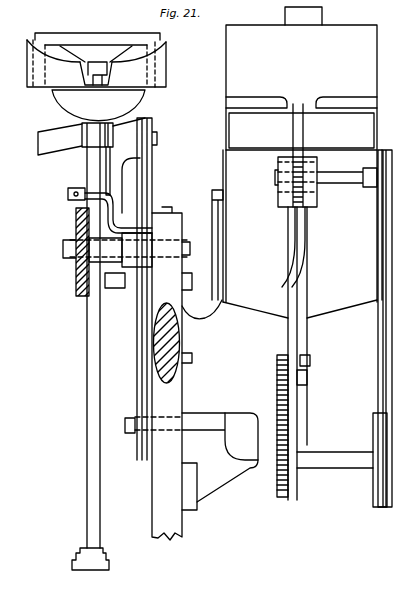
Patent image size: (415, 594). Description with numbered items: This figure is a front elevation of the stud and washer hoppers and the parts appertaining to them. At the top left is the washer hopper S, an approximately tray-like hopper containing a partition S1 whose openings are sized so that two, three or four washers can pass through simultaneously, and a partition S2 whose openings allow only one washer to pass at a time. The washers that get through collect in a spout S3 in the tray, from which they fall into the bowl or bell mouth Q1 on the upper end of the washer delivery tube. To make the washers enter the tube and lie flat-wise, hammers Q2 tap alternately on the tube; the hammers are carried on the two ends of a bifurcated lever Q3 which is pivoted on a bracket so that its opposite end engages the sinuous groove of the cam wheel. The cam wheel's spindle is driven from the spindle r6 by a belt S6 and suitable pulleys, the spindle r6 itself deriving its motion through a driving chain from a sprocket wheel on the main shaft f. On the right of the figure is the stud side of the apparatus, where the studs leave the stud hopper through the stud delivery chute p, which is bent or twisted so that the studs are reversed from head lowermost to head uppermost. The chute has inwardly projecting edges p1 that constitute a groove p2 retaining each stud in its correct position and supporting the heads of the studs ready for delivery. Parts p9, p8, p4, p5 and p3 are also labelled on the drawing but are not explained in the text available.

The washer hopper S is at (101, 60).
The partition S1 is at (67, 37).
The partition S2 is at (100, 60).
The spout S3 is at (68, 96).
The bowl Q1 is at (82, 73).
The hammers Q2 is at (70, 192).
The lever Q3 is at (80, 206).
The belt S6 is at (155, 325).
The spindle r6 is at (196, 423).
The groove p2 is at (318, 148).
The stud delivery chute p is at (309, 259).
The inwardly projecting edges p1 is at (307, 356).
The bar p9 is at (297, 340).
The block p8 is at (307, 372).
The pawl block p4 is at (305, 380).
The rack p5 is at (284, 497).
The main shaft f is at (323, 460).
The frame rail p3 is at (385, 310).